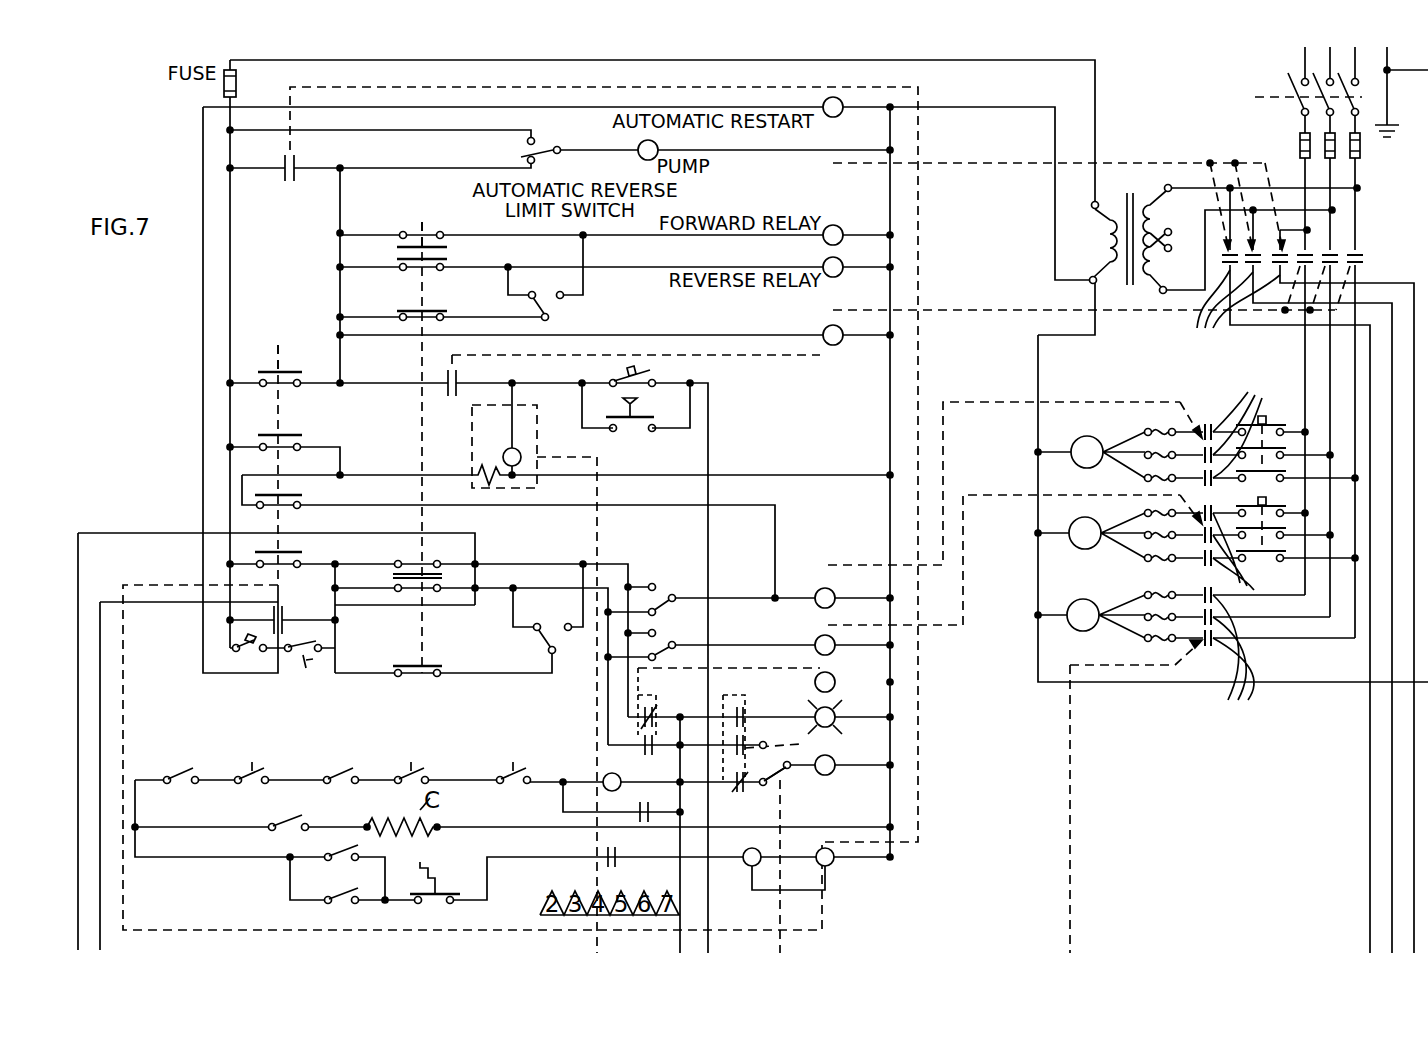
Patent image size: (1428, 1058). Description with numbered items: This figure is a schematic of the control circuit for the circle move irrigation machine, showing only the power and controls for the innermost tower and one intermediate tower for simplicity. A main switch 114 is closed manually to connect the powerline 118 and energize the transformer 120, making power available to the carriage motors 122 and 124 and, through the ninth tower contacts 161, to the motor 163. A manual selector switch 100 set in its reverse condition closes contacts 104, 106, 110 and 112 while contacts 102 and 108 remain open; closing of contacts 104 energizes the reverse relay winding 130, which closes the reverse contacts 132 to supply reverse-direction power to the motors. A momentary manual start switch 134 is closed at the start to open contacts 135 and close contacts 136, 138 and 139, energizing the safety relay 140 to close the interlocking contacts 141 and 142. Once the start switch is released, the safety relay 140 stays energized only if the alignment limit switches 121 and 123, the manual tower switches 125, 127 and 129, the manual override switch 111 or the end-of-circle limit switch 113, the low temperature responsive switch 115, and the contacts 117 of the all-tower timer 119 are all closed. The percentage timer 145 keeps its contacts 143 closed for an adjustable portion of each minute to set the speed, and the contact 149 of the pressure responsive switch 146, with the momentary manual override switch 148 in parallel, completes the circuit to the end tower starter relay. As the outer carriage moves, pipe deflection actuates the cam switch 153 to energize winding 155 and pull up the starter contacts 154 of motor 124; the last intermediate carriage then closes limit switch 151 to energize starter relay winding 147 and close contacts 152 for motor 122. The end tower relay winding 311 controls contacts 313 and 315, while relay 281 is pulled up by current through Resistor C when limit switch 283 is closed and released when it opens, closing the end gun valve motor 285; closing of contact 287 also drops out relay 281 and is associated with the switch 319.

The manual selector switch 100 is at (427, 222).
The contacts 102 is at (408, 230).
The contacts 104 is at (410, 272).
The contacts 106 is at (430, 312).
The contacts 108 is at (410, 570).
The contacts 110 is at (412, 588).
The switch 111 is at (340, 870).
The contacts 112 is at (430, 668).
The end-of-circle limit switch 113 is at (345, 912).
The main switch 114 is at (1292, 103).
The low temperature responsive switch 115 is at (435, 905).
The contacts 117 is at (606, 865).
The powerline 118 is at (1302, 60).
The all-tower timer 119 is at (470, 440).
The transformer 120 is at (1137, 180).
The alignment limit switch 121 is at (180, 775).
The motor 122 is at (1090, 436).
The alignment limit switch 123 is at (340, 775).
The motor 124 is at (1092, 549).
The manual tower switch 125 is at (262, 775).
The manual tower switch 127 is at (424, 775).
The manual tower switch 129 is at (512, 775).
The reverse relay winding 130 is at (823, 262).
The reverse contacts 132 is at (1274, 446).
The momentary manual start switch 134 is at (263, 360).
The contacts 135 is at (283, 500).
The contacts 136 is at (300, 365).
The contacts 138 is at (300, 440).
The contacts 139 is at (300, 557).
The safety relay 140 is at (835, 865).
The interlocking contacts 141 is at (285, 195).
The interlocking contacts 142 is at (288, 618).
The contacts 143 is at (446, 382).
The percentage timer 145 is at (842, 343).
The pressure responsive switch 146 is at (668, 423).
The starter relay winding 147 is at (818, 590).
The momentary manual override switch 148 is at (643, 366).
The contact 149 is at (640, 428).
The limit switch 151 is at (658, 598).
The contacts 152 is at (1234, 425).
The cam switch 153 is at (670, 645).
The starter contacts 154 is at (1235, 551).
The winding 155 is at (835, 650).
The contacts 161 is at (1229, 654).
The motor 163 is at (1085, 631).
The relay 281 is at (618, 777).
The limit switch 283 is at (290, 818).
The end gun valve motor 285 is at (828, 762).
The contact 287 is at (648, 822).
The end tower relay winding 311 is at (835, 690).
The contacts 313 is at (640, 715).
The contacts 315 is at (640, 745).
The switch 319 is at (775, 778).